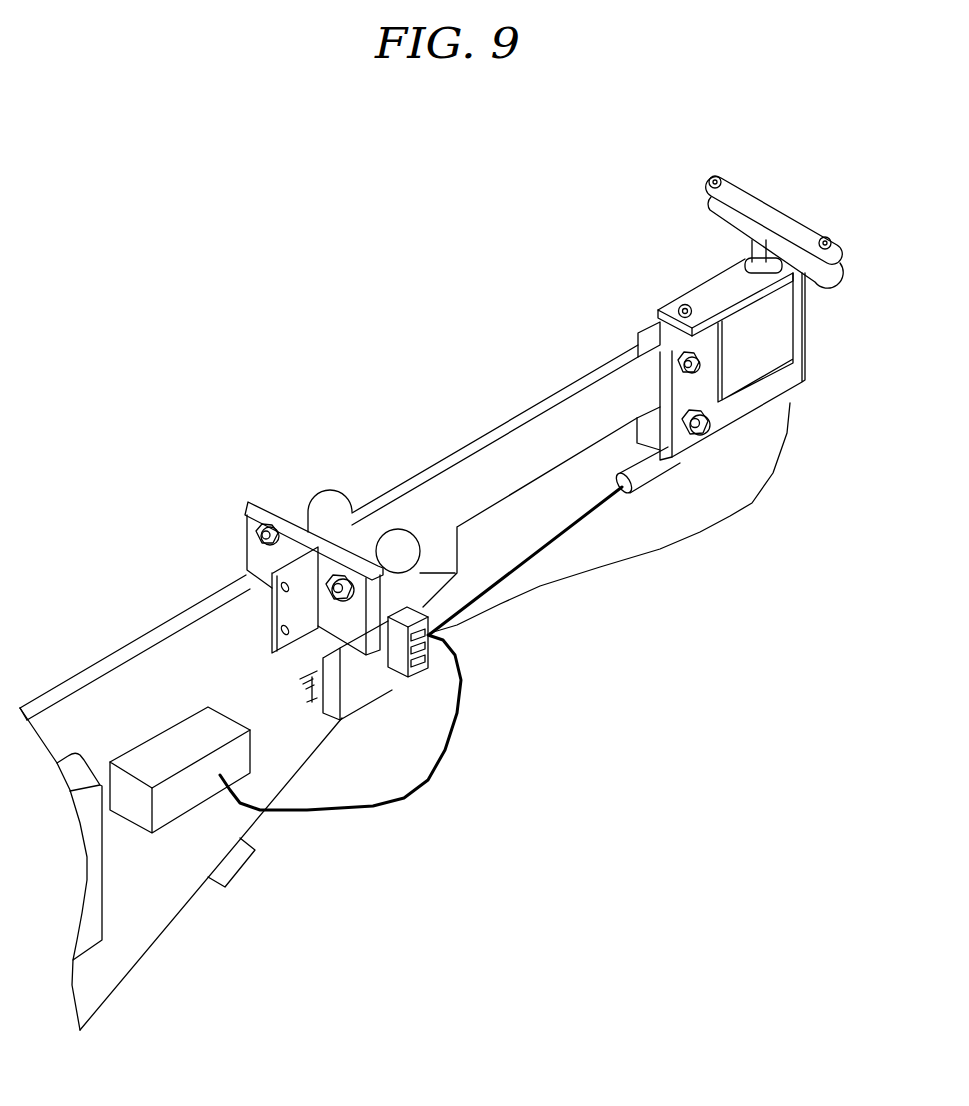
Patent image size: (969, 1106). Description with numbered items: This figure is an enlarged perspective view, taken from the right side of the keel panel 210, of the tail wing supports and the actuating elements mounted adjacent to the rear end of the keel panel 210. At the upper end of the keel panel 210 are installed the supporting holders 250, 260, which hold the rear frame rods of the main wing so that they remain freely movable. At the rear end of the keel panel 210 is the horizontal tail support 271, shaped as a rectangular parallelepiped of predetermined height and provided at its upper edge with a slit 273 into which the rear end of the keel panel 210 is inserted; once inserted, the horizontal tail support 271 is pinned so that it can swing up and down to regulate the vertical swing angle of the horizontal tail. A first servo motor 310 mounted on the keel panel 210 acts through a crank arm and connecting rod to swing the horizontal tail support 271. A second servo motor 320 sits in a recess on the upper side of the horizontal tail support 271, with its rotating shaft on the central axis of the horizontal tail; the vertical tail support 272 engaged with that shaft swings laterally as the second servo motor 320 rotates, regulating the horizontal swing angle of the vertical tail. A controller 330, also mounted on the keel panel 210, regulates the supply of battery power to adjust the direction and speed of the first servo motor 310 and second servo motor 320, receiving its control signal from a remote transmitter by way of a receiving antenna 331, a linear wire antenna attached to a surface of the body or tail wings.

The keel panel 210 is at (340, 676).
The supporting holder 250 is at (363, 696).
The supporting holder 260 is at (290, 535).
The horizontal tail support 271 is at (778, 366).
The vertical tail support 272 is at (774, 199).
The slit 273 is at (740, 473).
The first servo motor 310 is at (210, 827).
The second servo motor 320 is at (709, 266).
The controller 330 is at (505, 606).
The receiving antenna 331 is at (223, 630).